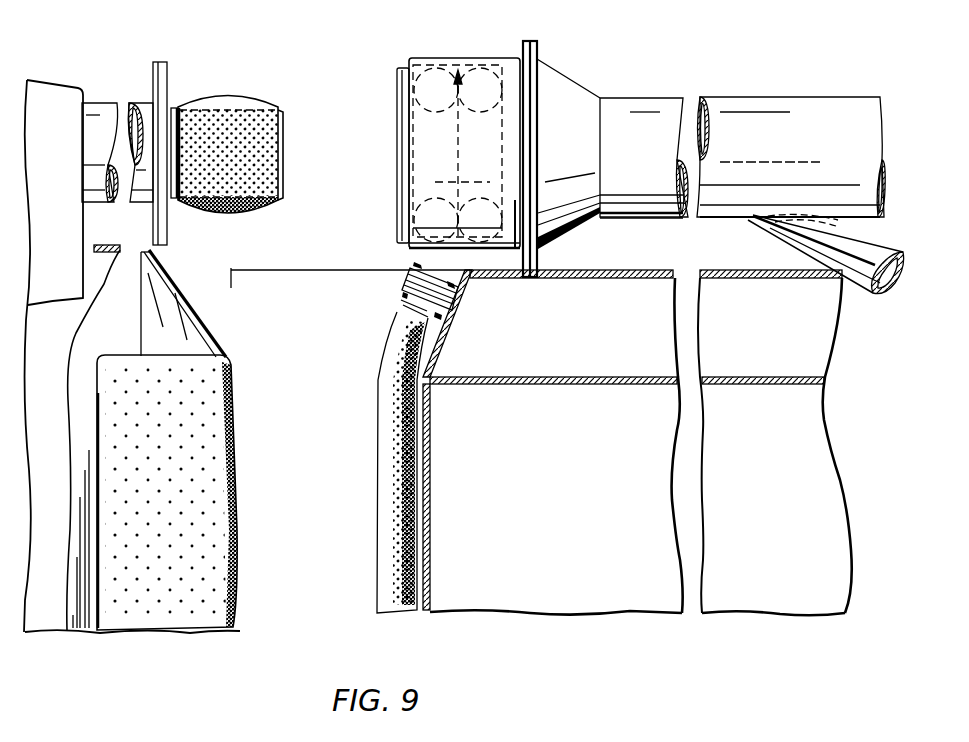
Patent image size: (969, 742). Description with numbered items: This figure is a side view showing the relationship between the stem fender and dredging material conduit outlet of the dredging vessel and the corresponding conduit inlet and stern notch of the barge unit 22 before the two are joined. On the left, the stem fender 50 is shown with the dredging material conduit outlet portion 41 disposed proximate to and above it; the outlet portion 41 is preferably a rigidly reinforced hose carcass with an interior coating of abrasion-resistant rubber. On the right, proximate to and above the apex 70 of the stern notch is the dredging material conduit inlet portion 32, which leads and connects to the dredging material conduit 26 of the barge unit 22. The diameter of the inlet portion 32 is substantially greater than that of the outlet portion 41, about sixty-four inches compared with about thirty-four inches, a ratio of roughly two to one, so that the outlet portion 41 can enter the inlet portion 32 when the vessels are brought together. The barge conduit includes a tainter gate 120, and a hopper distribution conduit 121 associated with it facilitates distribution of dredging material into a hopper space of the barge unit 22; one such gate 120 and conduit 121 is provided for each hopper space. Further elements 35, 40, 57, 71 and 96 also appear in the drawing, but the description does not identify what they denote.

The barge unit 22 is at (607, 270).
The dredging material conduit 26 is at (798, 144).
The dredging material conduit inlet portion 32 is at (558, 70).
The housing 35 is at (126, 319).
The tank 40 is at (70, 84).
The dredging material conduit outlet portion 41 is at (270, 100).
The stem fender 50 is at (236, 380).
The opening 57 is at (715, 221).
The apex of stern notch 70 is at (430, 447).
The liner tube 71 is at (377, 460).
The strut 96 is at (178, 292).
The tainter gate 120 is at (768, 229).
The hopper distribution conduit 121 is at (870, 254).